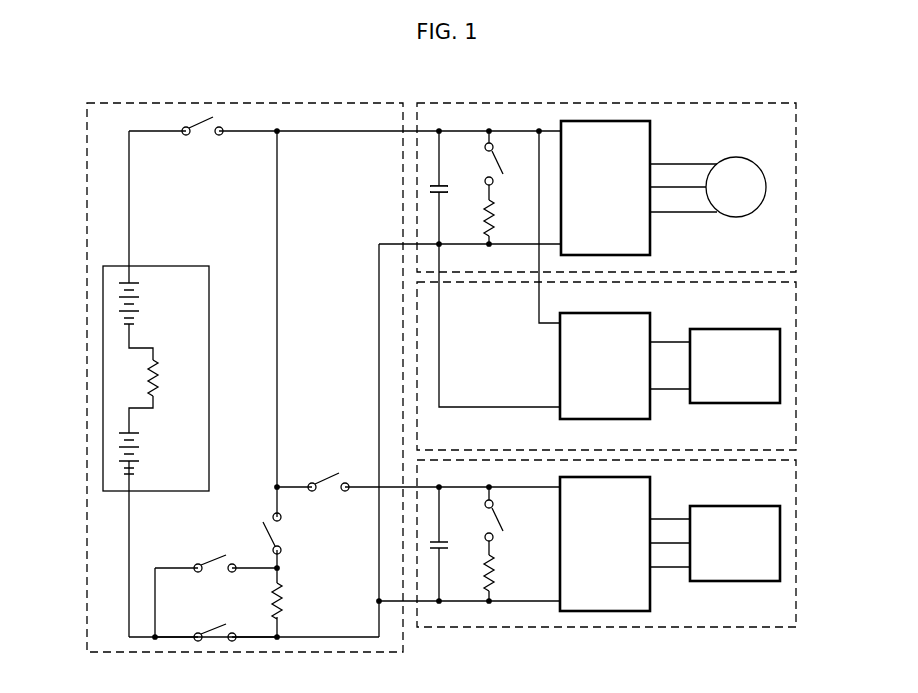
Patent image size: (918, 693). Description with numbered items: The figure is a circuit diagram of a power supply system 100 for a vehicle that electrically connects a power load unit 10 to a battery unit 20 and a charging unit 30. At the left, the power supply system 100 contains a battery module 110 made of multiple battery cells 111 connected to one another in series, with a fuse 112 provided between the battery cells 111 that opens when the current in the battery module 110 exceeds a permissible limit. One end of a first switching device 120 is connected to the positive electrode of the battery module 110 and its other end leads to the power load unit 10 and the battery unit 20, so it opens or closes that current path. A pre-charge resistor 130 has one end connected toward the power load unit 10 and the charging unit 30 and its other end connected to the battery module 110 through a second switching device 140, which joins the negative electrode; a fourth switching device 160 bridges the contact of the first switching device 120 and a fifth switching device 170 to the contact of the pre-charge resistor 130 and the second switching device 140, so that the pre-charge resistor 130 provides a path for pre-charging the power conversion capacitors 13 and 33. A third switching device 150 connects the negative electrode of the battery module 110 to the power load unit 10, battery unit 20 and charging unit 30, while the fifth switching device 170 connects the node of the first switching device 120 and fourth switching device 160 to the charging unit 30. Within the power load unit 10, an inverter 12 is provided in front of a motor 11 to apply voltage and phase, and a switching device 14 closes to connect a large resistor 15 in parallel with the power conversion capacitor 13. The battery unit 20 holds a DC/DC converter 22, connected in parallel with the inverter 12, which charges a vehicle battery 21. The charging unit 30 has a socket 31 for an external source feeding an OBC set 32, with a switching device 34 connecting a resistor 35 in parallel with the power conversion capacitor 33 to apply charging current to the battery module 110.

The power supply system 100 is at (86, 103).
The battery module 110 is at (209, 275).
The battery cell 111 is at (139, 283).
The fuse 112 is at (157, 378).
The first switching device 120 is at (202, 136).
The pre-charge resistor 130 is at (284, 599).
The second switching device 140 is at (217, 560).
The third switching device 150 is at (217, 628).
The fourth switching device 160 is at (284, 535).
The fifth switching device 170 is at (327, 480).
The power load unit 10 is at (805, 116).
The motor 11 is at (733, 217).
The inverter 12 is at (651, 128).
The power conversion capacitor 13 is at (443, 190).
The switching device 14 is at (498, 160).
The resistor 15 is at (496, 214).
The battery unit 20 is at (805, 296).
The battery for vehicle 21 is at (733, 404).
The DC/DC converter 22 is at (651, 314).
The charging unit 30 is at (805, 472).
The socket 31 is at (733, 582).
The OBC set 32 is at (651, 485).
The power conversion capacitor 33 is at (443, 546).
The switching device 34 is at (498, 517).
The resistor 35 is at (496, 571).